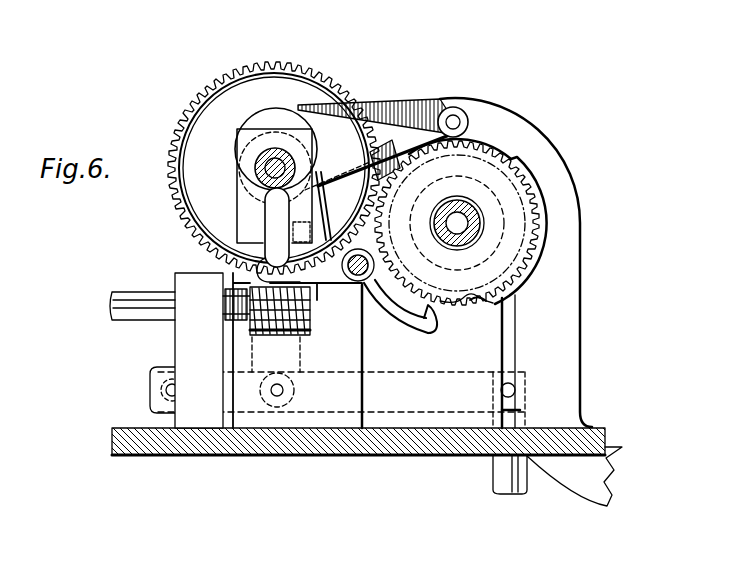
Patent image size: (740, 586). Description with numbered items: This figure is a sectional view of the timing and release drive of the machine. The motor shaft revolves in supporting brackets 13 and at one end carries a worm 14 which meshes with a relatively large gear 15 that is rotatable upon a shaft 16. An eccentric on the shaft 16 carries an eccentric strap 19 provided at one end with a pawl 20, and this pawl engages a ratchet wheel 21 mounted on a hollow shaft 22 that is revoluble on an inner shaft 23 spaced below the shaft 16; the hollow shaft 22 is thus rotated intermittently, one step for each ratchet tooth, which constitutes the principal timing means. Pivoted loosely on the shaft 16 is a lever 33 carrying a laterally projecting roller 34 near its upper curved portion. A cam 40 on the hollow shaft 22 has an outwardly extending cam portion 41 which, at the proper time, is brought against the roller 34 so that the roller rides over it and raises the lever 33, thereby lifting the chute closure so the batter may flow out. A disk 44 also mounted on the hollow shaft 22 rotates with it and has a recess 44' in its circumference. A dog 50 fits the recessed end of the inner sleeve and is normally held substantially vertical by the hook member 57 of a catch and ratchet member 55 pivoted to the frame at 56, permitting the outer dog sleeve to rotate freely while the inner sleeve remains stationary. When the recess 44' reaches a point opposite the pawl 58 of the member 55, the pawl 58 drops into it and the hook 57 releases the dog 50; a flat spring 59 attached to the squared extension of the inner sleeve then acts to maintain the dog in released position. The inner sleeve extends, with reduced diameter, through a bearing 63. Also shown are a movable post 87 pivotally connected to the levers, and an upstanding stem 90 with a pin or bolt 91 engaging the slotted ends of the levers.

The supporting brackets 13 is at (345, 350).
The worm 14 is at (310, 331).
The gear 15 is at (277, 61).
The shaft 16 is at (262, 169).
The eccentric strap 19 is at (328, 160).
The pawl 20 is at (432, 103).
The ratchet wheel 21 is at (536, 266).
The hollow shaft 22 is at (456, 212).
The inner shaft 23 is at (458, 236).
The lever 33 is at (383, 109).
The roller 34 is at (458, 108).
The cam 40 is at (531, 302).
The cam portion 41 is at (536, 178).
The disk 44 is at (466, 286).
The recess 44' is at (473, 324).
The dog 50 is at (270, 235).
The catch and ratchet member 55 is at (350, 279).
The pivot 56 is at (374, 292).
The hook member 57 is at (237, 297).
The pawl 58 is at (429, 325).
The flat spring 59 is at (323, 206).
The bearing 63 is at (262, 184).
The movable post 87 is at (500, 478).
The upstanding stem 90 is at (163, 430).
The pin or bolt 91 is at (165, 390).